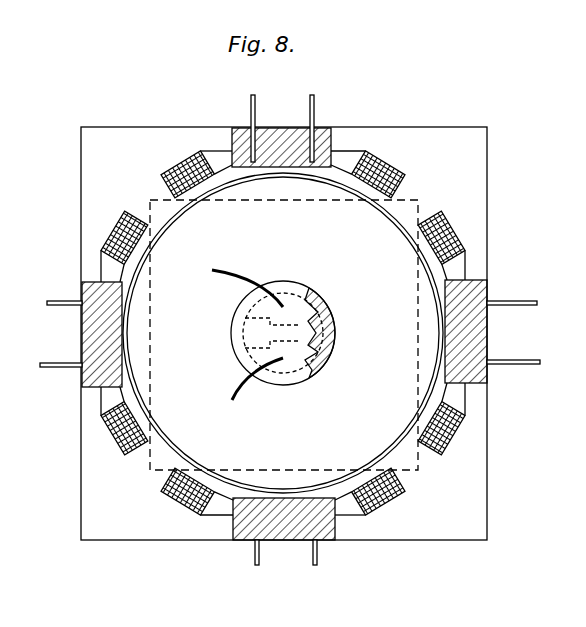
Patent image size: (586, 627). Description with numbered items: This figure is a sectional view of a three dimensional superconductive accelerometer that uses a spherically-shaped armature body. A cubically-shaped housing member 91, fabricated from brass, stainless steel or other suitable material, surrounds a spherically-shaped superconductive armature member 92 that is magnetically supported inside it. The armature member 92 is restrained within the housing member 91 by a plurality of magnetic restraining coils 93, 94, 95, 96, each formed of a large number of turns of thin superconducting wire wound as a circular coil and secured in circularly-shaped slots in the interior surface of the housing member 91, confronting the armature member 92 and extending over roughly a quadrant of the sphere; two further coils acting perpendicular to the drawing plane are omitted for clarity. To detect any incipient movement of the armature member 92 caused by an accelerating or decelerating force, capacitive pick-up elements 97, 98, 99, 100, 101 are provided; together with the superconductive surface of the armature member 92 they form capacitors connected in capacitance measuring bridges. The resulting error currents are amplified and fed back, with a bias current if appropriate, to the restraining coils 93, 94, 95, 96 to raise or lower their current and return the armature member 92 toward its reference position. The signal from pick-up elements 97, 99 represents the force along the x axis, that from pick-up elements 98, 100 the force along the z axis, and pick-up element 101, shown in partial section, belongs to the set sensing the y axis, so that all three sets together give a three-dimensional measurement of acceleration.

The housing member 91 is at (437, 138).
The superconductive armature member 92 is at (385, 240).
The magnetic restraining coil 93 is at (447, 236).
The magnetic restraining coil 94 is at (182, 161).
The magnetic restraining coil 95 is at (113, 238).
The magnetic restraining coil 96 is at (178, 505).
The capacitive pick-up element 97 is at (447, 300).
The capacitive pick-up element 98 is at (302, 163).
The capacitive pick-up element 99 is at (127, 310).
The capacitive pick-up element 100 is at (300, 500).
The capacitive pick-up element 101 is at (315, 330).